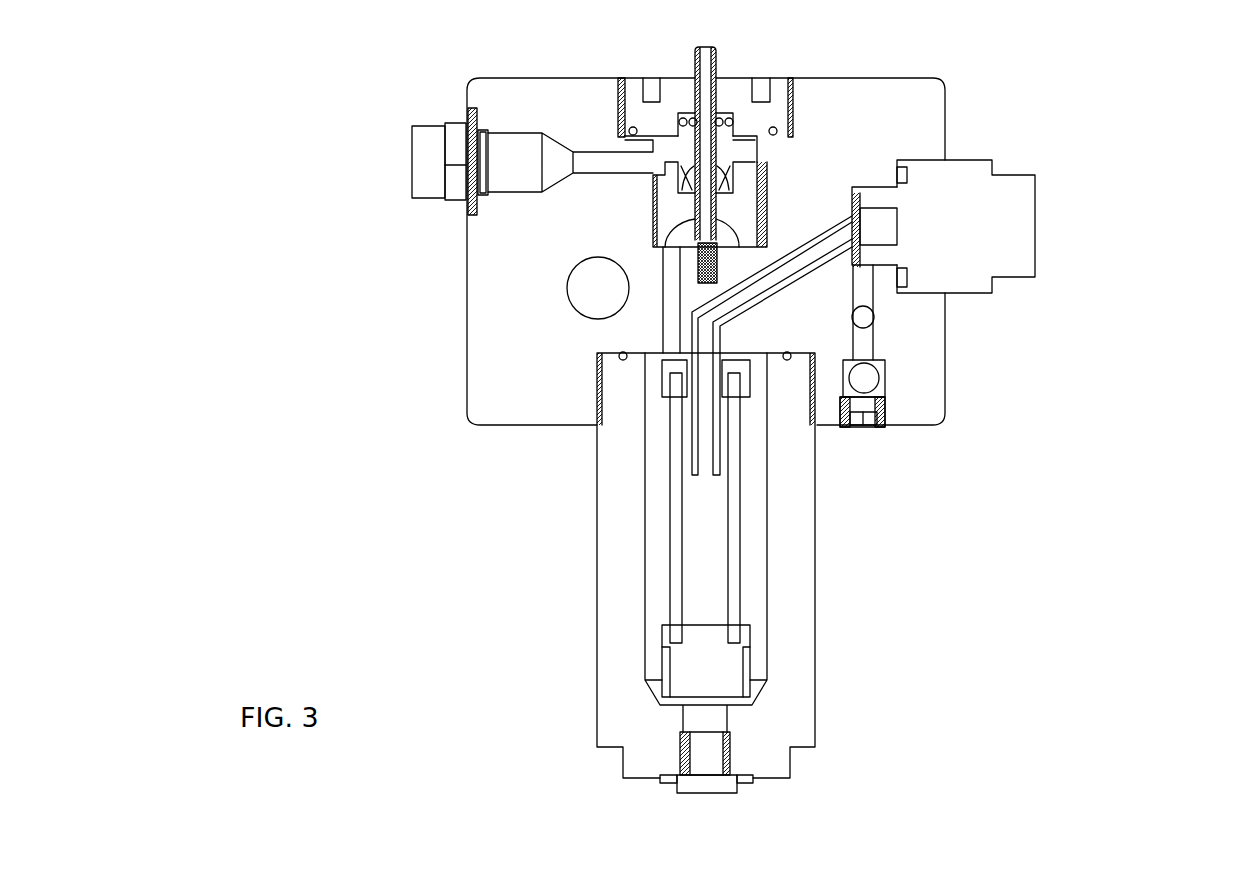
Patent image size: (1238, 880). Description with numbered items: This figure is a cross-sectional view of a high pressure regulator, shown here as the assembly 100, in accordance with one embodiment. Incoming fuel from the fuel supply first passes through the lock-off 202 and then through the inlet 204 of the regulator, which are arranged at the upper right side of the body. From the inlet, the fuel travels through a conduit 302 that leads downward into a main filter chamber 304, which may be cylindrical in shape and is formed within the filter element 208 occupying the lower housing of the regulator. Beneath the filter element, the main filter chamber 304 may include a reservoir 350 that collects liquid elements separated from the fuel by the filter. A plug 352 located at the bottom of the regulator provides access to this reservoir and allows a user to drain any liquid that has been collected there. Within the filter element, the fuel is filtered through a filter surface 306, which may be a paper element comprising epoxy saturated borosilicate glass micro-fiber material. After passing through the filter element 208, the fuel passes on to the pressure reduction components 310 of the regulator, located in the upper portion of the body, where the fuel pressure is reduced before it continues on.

The valve assembly 100 is at (393, 104).
The lock-off 202 is at (977, 200).
The inlet 204 is at (850, 235).
The filter element 208 is at (780, 488).
The conduit 302 is at (780, 268).
The main filter chamber 304 is at (700, 558).
The filter surface 306 is at (675, 512).
The pressure reduction components 310 is at (653, 180).
The reservoir 350 is at (712, 663).
The plug 352 is at (712, 745).